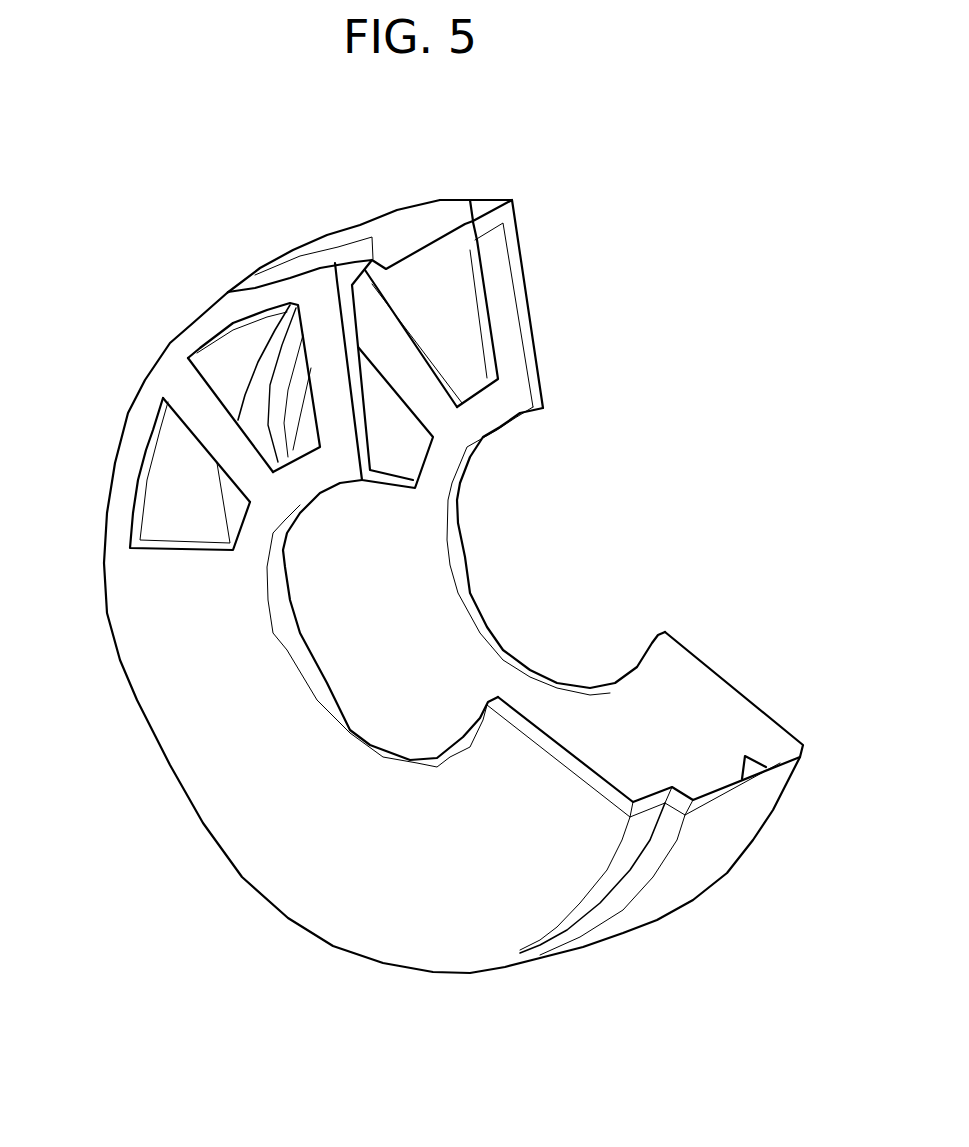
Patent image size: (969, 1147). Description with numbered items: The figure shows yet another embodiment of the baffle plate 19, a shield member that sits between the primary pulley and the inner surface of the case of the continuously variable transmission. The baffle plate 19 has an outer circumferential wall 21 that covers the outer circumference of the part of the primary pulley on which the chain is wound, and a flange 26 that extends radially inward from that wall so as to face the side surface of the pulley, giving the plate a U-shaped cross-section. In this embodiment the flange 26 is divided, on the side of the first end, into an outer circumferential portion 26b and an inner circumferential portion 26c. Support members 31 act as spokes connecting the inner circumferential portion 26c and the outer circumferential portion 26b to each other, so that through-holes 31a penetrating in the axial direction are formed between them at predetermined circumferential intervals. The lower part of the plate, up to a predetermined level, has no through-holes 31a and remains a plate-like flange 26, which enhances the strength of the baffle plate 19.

The baffle plate 19 is at (588, 190).
The outer circumferential wall 21 is at (373, 228).
The flange 26 is at (300, 902).
The outer circumferential portion 26b is at (147, 397).
The inner circumferential portion 26c is at (268, 527).
The support member 31 is at (510, 300).
The through-hole 31a is at (477, 365).